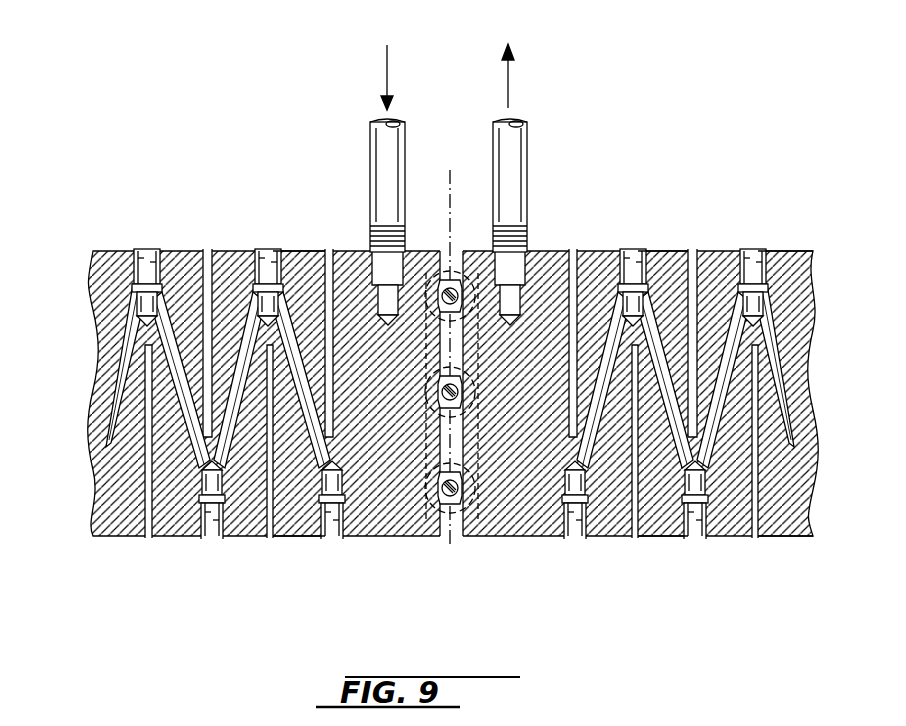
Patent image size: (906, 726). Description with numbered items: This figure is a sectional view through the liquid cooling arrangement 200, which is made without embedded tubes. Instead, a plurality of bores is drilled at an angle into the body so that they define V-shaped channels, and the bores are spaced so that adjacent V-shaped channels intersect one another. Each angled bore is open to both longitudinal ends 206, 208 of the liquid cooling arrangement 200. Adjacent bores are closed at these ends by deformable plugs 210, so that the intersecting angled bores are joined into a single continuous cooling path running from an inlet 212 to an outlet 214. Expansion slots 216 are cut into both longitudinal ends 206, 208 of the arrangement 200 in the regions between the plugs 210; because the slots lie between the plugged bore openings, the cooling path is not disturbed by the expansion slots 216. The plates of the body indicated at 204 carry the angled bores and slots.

The liquid cooling arrangement 200 is at (76, 180).
The plate 204 is at (290, 250).
The longitudinal end 206 is at (786, 250).
The longitudinal end 208 is at (778, 537).
The deformable plug 210 is at (148, 252).
The inlet 212 is at (385, 152).
The outlet 214 is at (512, 160).
The expansion slot 216 is at (200, 250).